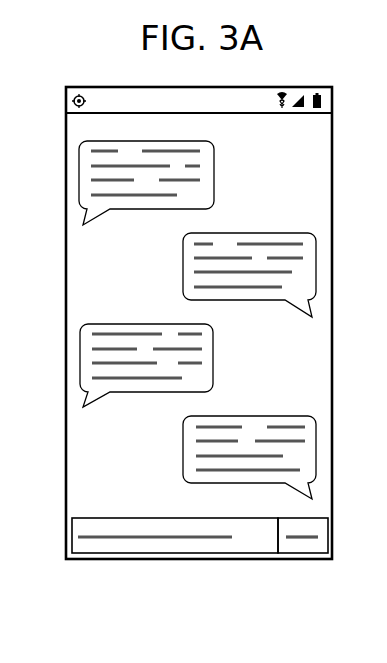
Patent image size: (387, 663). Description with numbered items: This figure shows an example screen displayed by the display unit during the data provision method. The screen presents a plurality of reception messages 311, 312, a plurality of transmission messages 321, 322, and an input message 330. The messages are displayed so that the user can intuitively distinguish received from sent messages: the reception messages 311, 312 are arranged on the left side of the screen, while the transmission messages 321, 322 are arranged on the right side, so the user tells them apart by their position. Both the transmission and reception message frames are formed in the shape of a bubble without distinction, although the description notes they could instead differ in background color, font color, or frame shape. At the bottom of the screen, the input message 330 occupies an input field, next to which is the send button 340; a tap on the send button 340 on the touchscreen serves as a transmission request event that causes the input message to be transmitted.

The reception message 311 is at (79, 176).
The reception message 312 is at (80, 357).
The transmission message 321 is at (316, 265).
The transmission message 322 is at (316, 447).
The input message 330 is at (162, 541).
The send button 340 is at (302, 541).